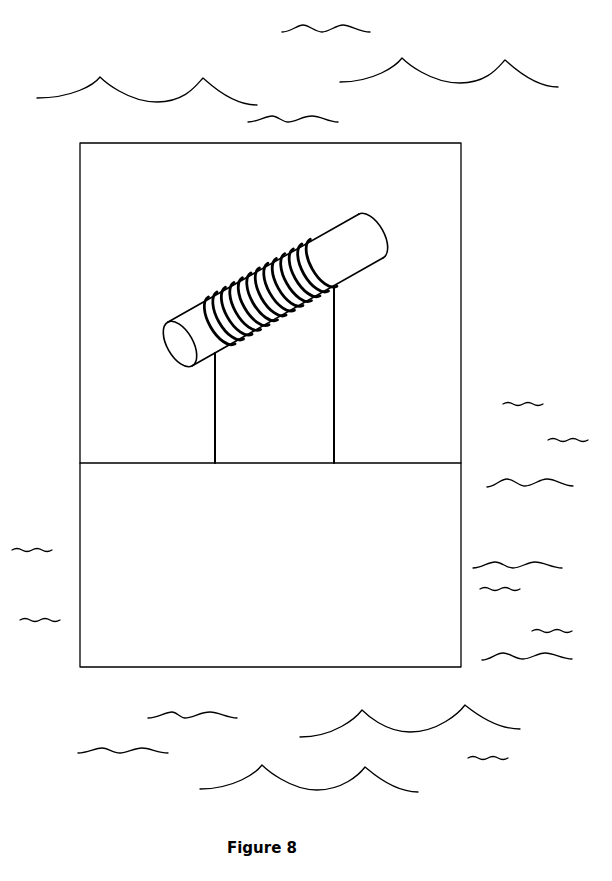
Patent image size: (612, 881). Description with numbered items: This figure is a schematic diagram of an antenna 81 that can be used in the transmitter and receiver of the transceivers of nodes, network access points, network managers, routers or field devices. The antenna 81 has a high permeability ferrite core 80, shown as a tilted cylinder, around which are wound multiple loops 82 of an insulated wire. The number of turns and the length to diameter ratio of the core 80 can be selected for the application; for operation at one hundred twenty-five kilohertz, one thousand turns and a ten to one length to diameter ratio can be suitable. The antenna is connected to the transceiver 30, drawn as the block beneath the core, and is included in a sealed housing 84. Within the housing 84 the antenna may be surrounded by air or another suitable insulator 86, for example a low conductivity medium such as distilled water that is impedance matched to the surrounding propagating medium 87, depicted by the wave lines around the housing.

The antenna 81 is at (59, 44).
The ferrite core 80 is at (352, 271).
The loops 82 is at (357, 359).
The sealed housing 84 is at (314, 405).
The insulator 86 is at (315, 303).
The transceiver 30 is at (270, 515).
The propagating medium 87 is at (300, 408).